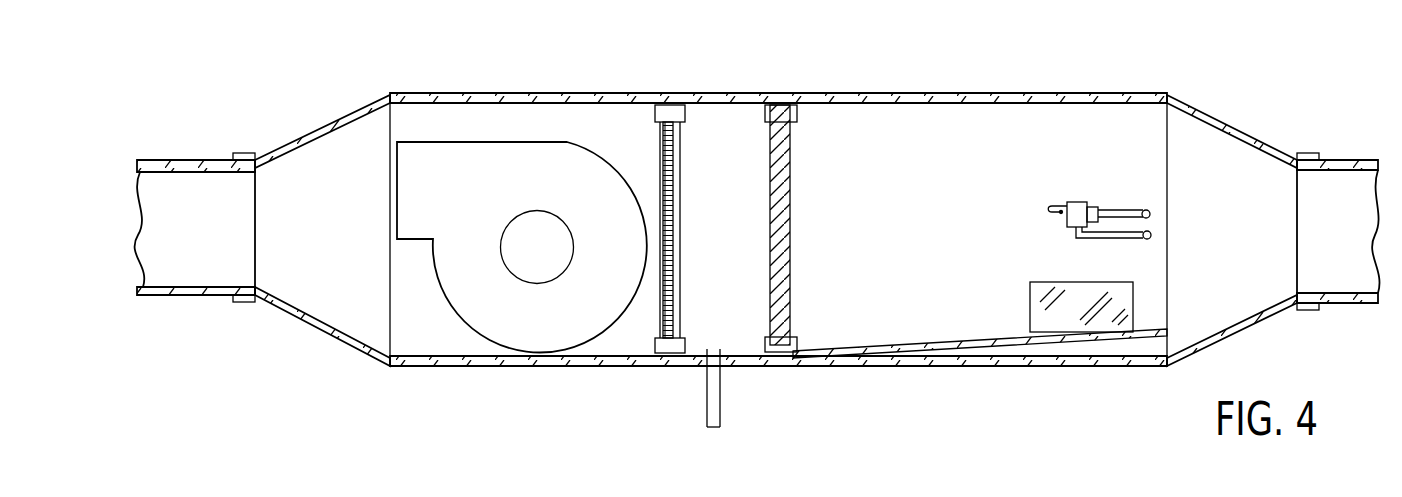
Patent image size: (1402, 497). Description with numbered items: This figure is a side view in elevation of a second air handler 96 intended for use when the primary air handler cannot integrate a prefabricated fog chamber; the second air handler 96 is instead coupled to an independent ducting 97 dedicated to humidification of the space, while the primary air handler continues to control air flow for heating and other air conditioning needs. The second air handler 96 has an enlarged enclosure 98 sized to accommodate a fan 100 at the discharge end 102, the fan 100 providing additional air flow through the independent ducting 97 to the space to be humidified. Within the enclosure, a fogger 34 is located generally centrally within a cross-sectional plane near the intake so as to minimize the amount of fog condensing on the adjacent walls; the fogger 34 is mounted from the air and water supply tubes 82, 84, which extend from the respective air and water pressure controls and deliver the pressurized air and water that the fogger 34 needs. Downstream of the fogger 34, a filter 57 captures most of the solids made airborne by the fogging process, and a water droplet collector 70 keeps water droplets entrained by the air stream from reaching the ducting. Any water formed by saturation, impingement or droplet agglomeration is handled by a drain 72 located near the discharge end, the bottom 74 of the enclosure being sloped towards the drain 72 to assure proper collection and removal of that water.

The second air handler 96 is at (1137, 75).
The independent ducting 97 is at (193, 160).
The enlarged enclosure 98 is at (901, 94).
The fan 100 is at (555, 320).
The discharge end 102 is at (412, 313).
The filter 57 is at (675, 229).
The water droplet collector 70 is at (789, 298).
The drain 72 is at (722, 395).
The bottom 74 is at (950, 336).
The fogger 34 is at (1077, 201).
The water supply tube 84 is at (1152, 214).
The air supply tube 82 is at (1152, 236).